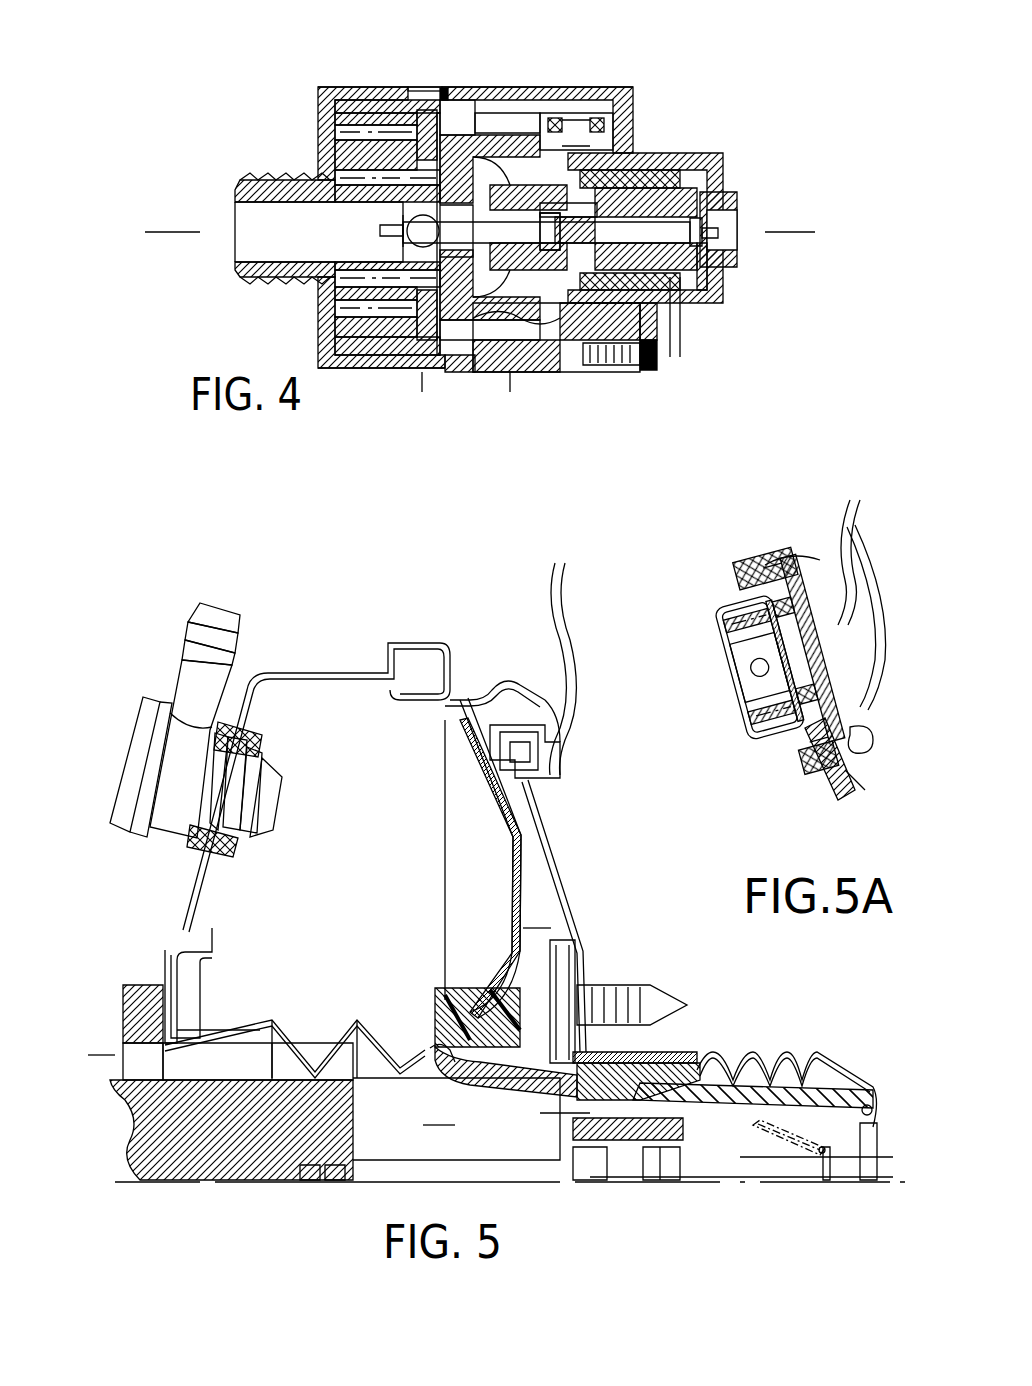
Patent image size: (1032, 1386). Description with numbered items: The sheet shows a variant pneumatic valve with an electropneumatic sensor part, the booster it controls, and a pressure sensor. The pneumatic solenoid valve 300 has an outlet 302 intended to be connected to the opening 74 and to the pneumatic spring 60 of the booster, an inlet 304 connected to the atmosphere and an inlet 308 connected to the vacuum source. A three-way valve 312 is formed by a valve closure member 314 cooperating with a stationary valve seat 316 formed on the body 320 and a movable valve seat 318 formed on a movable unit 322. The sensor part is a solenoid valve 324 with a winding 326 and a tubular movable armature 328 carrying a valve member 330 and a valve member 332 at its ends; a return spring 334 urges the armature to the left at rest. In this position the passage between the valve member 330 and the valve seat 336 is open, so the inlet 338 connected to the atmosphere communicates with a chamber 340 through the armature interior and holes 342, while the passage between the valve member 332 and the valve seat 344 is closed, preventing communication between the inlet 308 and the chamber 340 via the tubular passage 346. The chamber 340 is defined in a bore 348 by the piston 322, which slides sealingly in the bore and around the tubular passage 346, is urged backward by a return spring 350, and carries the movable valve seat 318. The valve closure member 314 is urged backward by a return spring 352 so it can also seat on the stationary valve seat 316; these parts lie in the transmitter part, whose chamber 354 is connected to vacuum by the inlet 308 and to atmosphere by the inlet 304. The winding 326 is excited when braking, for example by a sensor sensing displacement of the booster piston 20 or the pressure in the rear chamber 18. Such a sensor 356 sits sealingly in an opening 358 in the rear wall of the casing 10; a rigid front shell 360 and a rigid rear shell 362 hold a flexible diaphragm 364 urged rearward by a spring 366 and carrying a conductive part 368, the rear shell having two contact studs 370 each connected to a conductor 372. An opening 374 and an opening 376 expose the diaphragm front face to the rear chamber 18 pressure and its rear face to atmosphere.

In FIG. 4, the pneumatic solenoid valve 300 is at (355, 382).
In FIG. 4, the outlet 302 is at (512, 393).
In FIG. 5, the outlet 302 is at (105, 1055).
In FIG. 4, the inlet 304 is at (425, 393).
In FIG. 4, the inlet 308 is at (170, 232).
In FIG. 4, the three-way valve 312 is at (446, 90).
In FIG. 4, the valve closure member 314 is at (388, 90).
In FIG. 4, the stationary valve seat 316 is at (466, 374).
In FIG. 4, the movable valve seat 318 is at (487, 92).
In FIG. 4, the body 320 is at (525, 90).
In FIG. 4, the movable unit 322 is at (560, 90).
In FIG. 4, the solenoid valve 324 is at (705, 140).
In FIG. 4, the winding 326 is at (688, 155).
In FIG. 4, the movable armature 328 is at (706, 300).
In FIG. 4, the valve member 330 is at (722, 210).
In FIG. 4, the valve member 332 is at (528, 196).
In FIG. 4, the return spring 334 is at (660, 330).
In FIG. 4, the valve seat 336 is at (712, 252).
In FIG. 4, the inlet 338 is at (790, 232).
In FIG. 4, the chamber 340 is at (565, 185).
In FIG. 4, the holes 342 is at (610, 362).
In FIG. 4, the valve seat 344 is at (528, 265).
In FIG. 4, the tubular passage 346 is at (540, 347).
In FIG. 4, the bore 348 is at (612, 90).
In FIG. 4, the return spring 350 is at (335, 300).
In FIG. 4, the return spring 352 is at (330, 335).
In FIG. 4, the chamber 354 is at (335, 183).
In FIG. 5, the sensor 356 is at (552, 762).
In FIG. 5A, the sensor 356 is at (858, 782).
In FIG. 5A, the opening 358 is at (818, 762).
In FIG. 5A, the rigid front shell 360 is at (760, 740).
In FIG. 5A, the rigid rear shell 362 is at (845, 690).
In FIG. 5A, the flexible diaphragm 364 is at (775, 610).
In FIG. 5A, the spring 366 is at (725, 618).
In FIG. 5A, the conductive part 368 is at (815, 700).
In FIG. 5A, the contact studs 370 is at (790, 600).
In FIG. 4, the conductor 372 is at (682, 358).
In FIG. 5, the conductor 372 is at (556, 575).
In FIG. 5A, the conductor 372 is at (856, 505).
In FIG. 5A, the opening 374 is at (760, 690).
In FIG. 5A, the opening 376 is at (845, 630).
In FIG. 5, the casing 10 is at (462, 690).
In FIG. 5A, the casing 10 is at (770, 565).
In FIG. 5, the rear chamber 18 is at (375, 860).
In FIG. 5, the booster piston 20 is at (432, 988).
In FIG. 5, the pneumatic spring 60 is at (510, 1061).
In FIG. 5, the opening 74 is at (142, 1040).